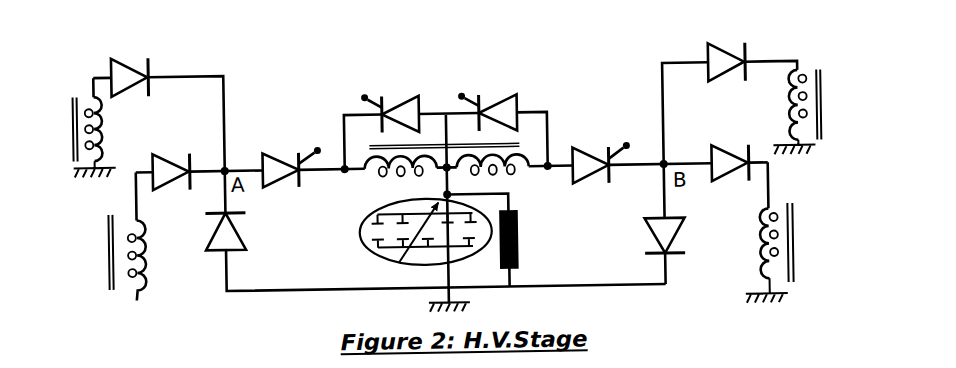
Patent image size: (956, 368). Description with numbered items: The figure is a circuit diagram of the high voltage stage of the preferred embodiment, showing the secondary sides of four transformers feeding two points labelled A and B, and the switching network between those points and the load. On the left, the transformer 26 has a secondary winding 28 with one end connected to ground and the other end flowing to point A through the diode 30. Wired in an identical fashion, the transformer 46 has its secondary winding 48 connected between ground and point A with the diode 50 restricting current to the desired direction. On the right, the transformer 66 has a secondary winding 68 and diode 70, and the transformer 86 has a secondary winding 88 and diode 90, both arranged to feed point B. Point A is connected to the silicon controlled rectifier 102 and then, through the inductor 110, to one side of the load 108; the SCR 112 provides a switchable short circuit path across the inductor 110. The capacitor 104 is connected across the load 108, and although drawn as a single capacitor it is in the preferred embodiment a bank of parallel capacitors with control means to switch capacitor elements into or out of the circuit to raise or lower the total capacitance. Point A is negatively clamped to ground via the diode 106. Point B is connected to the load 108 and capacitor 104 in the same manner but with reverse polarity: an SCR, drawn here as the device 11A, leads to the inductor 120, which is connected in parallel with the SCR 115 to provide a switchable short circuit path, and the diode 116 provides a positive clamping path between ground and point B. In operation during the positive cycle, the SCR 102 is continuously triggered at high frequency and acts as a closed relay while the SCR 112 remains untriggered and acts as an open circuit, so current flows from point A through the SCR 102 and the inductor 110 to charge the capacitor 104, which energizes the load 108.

The transformer 26 is at (79, 71).
The secondary winding 28 is at (105, 119).
The diode 30 is at (138, 51).
The transformer 46 is at (99, 245).
The secondary winding 48 is at (149, 250).
The diode 50 is at (174, 148).
The silicon controlled rectifier (SCR) 102 is at (281, 146).
The diode 106 is at (244, 231).
The SCR 112 is at (395, 93).
The SCR 115 is at (492, 93).
The inductor 110 is at (400, 178).
The inductor 120 is at (500, 176).
The capacitor 104 is at (353, 238).
The load 108 is at (531, 258).
The thyristor (SCR) 11A is at (588, 180).
The diode 116 is at (646, 239).
The diode 70 is at (728, 44).
The secondary winding 68 is at (787, 104).
The transformer 66 is at (831, 111).
The diode 90 is at (730, 177).
The secondary winding 88 is at (752, 253).
The transformer 86 is at (805, 240).